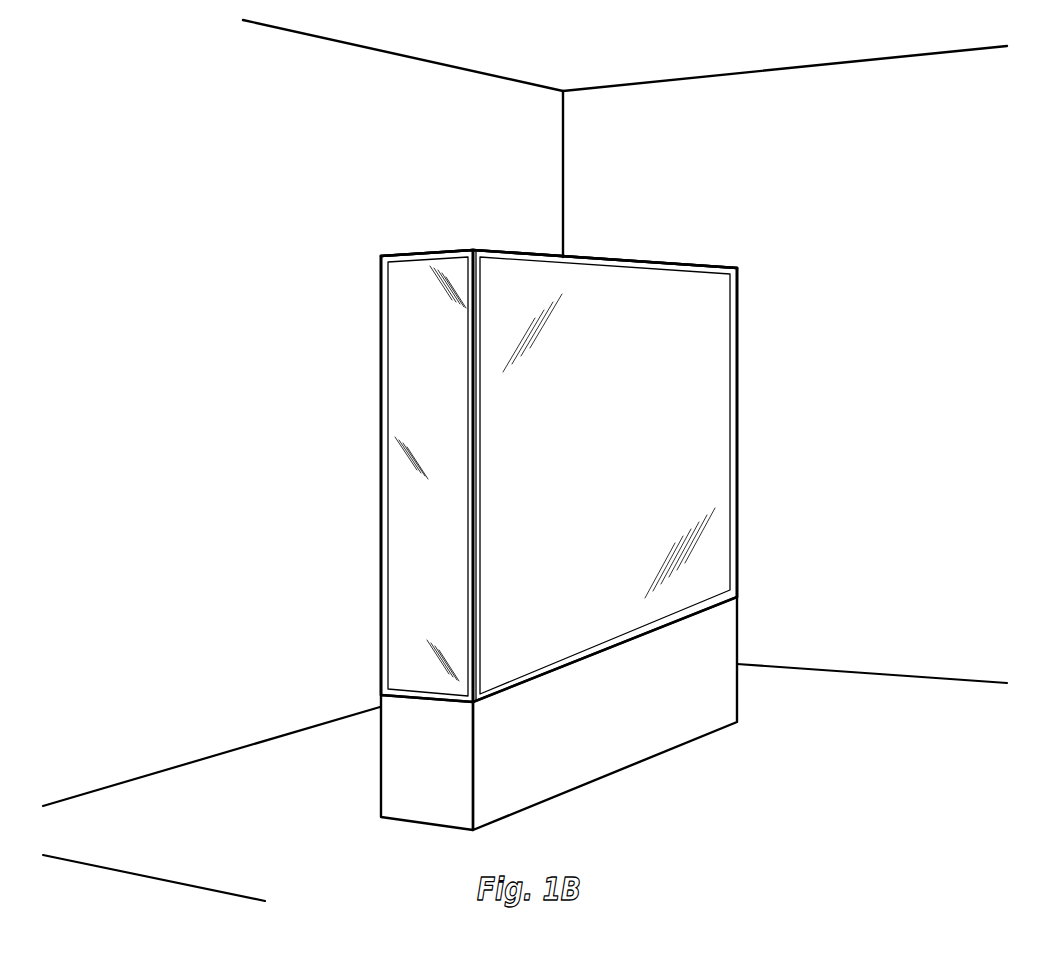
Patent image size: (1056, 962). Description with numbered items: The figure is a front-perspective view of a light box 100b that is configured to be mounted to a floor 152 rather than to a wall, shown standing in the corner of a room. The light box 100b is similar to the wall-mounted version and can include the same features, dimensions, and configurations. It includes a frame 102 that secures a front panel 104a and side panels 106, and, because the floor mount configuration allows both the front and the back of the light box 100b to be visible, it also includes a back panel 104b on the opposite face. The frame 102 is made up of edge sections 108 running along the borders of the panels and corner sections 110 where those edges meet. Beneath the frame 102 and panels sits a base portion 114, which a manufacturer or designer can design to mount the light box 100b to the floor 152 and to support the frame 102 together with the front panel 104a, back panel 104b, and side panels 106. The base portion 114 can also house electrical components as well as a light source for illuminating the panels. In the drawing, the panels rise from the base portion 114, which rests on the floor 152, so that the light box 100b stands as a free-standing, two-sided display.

The light box 100b is at (447, 160).
The frame 102 is at (540, 495).
The front panel 104a is at (688, 445).
The back panel 104b is at (363, 476).
The side panels 106 is at (413, 607).
The edge sections 108 is at (622, 262).
The corner sections 110 is at (403, 255).
The base portion 114 is at (698, 695).
The floor 152 is at (237, 820).